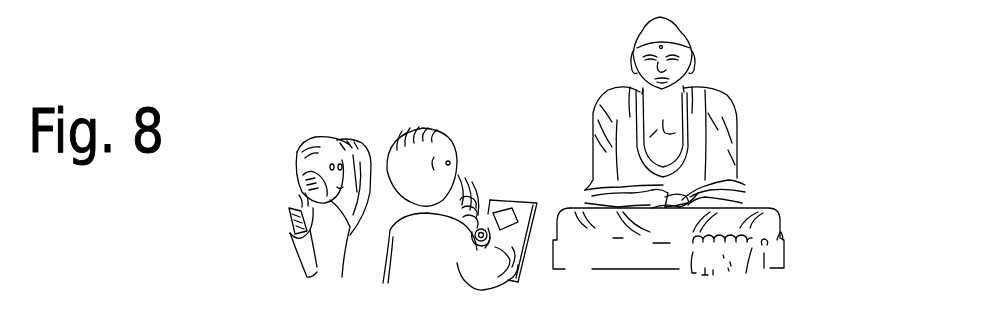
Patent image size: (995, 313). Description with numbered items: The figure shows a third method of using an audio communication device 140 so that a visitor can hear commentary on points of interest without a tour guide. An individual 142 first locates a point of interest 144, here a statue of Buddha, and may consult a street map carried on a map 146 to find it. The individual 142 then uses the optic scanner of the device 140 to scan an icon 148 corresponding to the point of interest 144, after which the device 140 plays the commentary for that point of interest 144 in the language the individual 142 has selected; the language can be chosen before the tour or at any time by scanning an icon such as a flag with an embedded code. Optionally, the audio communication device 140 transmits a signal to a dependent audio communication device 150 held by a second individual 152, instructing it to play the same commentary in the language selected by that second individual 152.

The audio communication device 140 is at (505, 211).
The individual 142 is at (400, 136).
The point of interest 144 is at (599, 63).
The map 146 is at (527, 261).
The icon 148 is at (482, 227).
The dependent audio communication device 150 is at (287, 209).
The second individual 152 is at (295, 163).